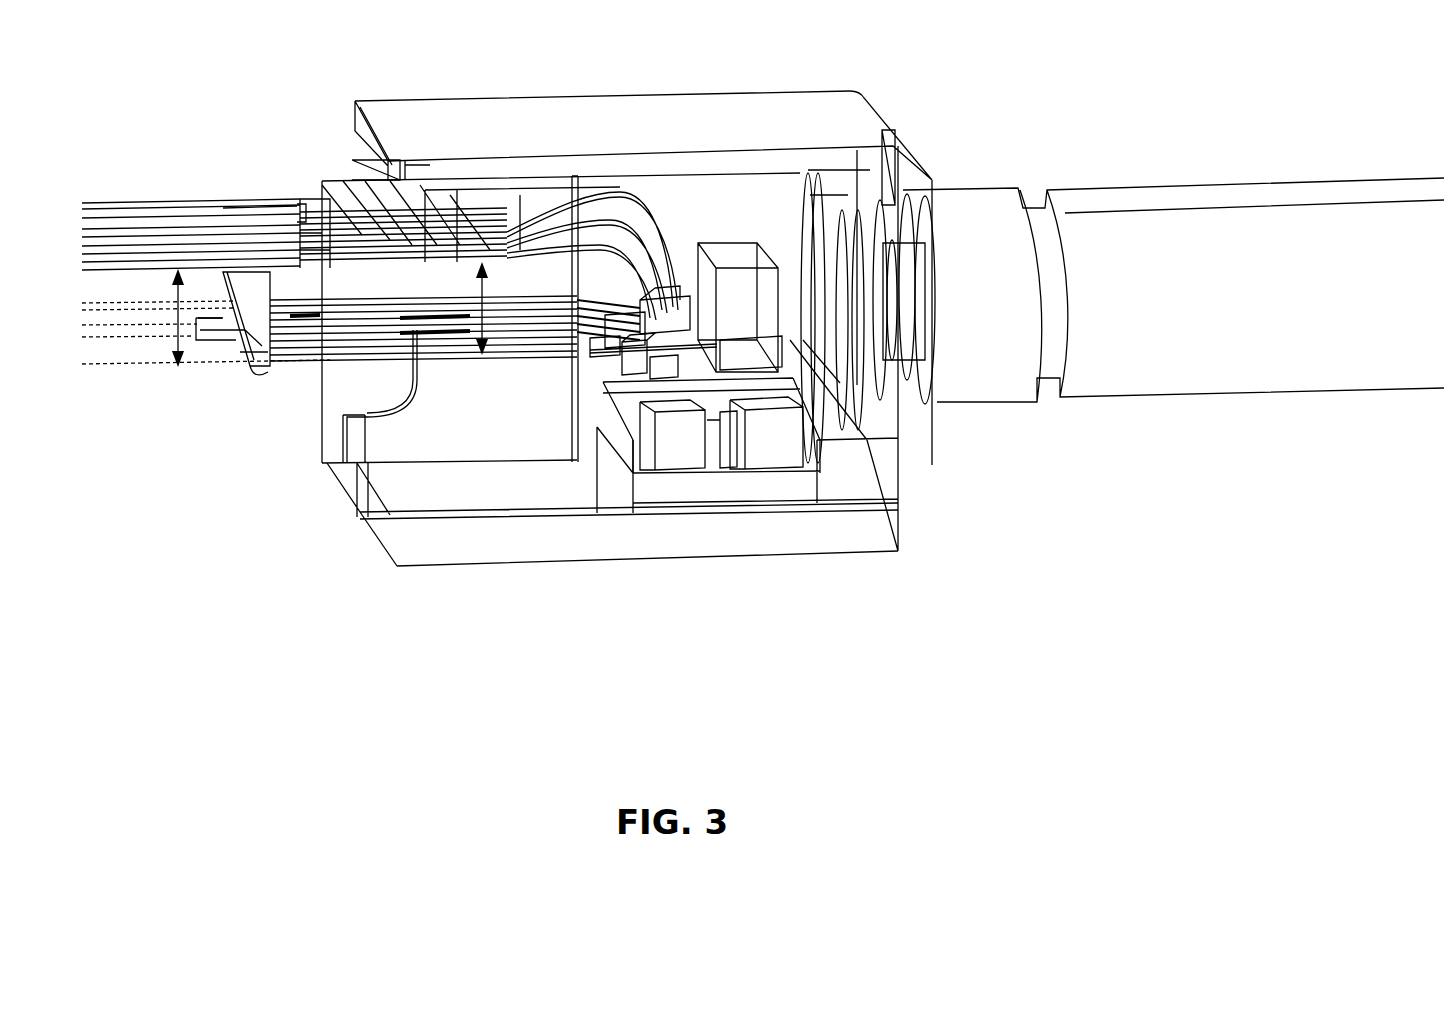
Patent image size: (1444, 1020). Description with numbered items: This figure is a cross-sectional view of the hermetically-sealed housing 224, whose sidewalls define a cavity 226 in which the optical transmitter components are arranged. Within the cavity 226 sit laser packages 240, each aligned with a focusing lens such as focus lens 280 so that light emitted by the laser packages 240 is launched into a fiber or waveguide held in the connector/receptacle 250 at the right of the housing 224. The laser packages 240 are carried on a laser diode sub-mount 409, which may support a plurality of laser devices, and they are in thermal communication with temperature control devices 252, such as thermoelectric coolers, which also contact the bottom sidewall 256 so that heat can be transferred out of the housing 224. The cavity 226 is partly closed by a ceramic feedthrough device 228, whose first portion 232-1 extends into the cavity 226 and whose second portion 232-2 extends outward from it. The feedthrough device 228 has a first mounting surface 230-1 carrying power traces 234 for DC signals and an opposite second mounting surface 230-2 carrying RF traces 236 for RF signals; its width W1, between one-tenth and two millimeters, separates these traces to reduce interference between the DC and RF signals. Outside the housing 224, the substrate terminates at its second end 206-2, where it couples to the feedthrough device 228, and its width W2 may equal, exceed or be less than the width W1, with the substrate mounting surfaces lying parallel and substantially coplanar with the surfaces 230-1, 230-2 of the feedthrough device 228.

The second end 206-2 is at (200, 192).
The feedthrough device 228 is at (314, 200).
The first mounting surface 230-1 is at (466, 208).
The power traces 234 is at (396, 210).
The cavity 226 is at (640, 172).
The laser packages 240 is at (665, 274).
The housing 224 is at (788, 93).
The focus lens 280 is at (733, 229).
The width of the feedthrough device W1 is at (482, 308).
The width of the substrate W2 is at (191, 318).
The second portion 232-2 is at (268, 382).
The RF traces 236 is at (340, 364).
The second mounting surface 230-2 is at (440, 372).
The first portion 232-1 is at (527, 376).
The laser diode sub-mount 409 is at (633, 372).
The temperature control devices 252 is at (695, 496).
The bottom sidewall 256 is at (545, 576).
The connector/receptacle 250 is at (1198, 384).